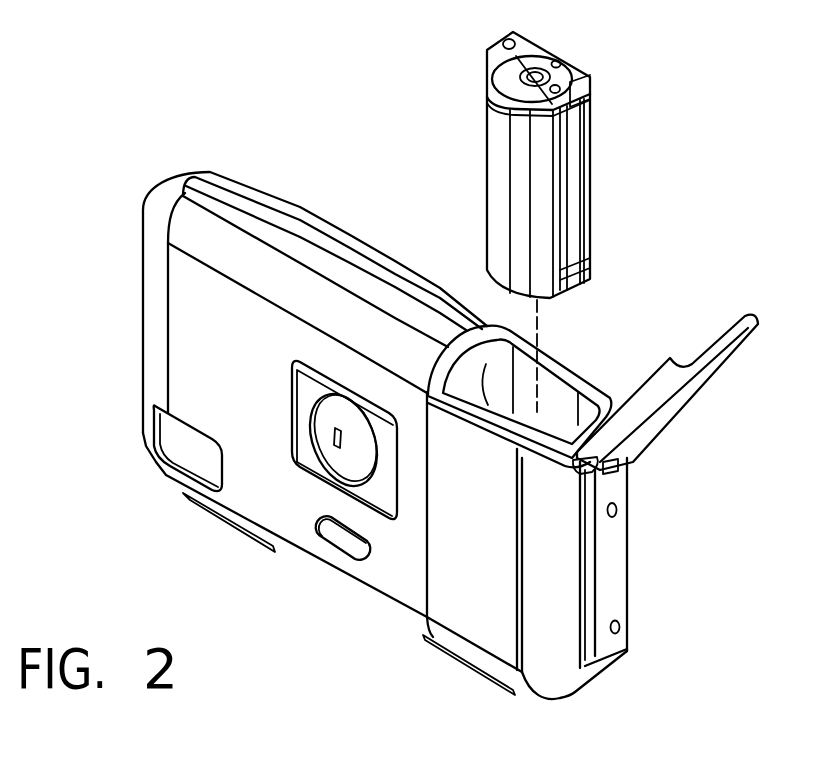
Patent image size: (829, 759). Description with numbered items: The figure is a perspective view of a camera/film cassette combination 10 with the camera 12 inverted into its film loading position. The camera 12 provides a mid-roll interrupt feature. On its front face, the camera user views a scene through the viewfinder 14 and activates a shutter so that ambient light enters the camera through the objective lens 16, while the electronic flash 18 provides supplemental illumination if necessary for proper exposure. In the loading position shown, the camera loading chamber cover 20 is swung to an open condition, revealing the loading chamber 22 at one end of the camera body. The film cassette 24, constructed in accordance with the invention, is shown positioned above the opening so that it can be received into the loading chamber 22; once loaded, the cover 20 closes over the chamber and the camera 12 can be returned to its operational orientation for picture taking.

The camera/film cassette combination 10 is at (103, 130).
The camera 12 is at (247, 190).
The viewfinder 14 is at (347, 540).
The objective lens 16 is at (323, 413).
The electronic flash 18 is at (177, 455).
The camera loading chamber cover 20 is at (676, 416).
The loading chamber 22 is at (566, 384).
The film cassette 24 is at (583, 193).